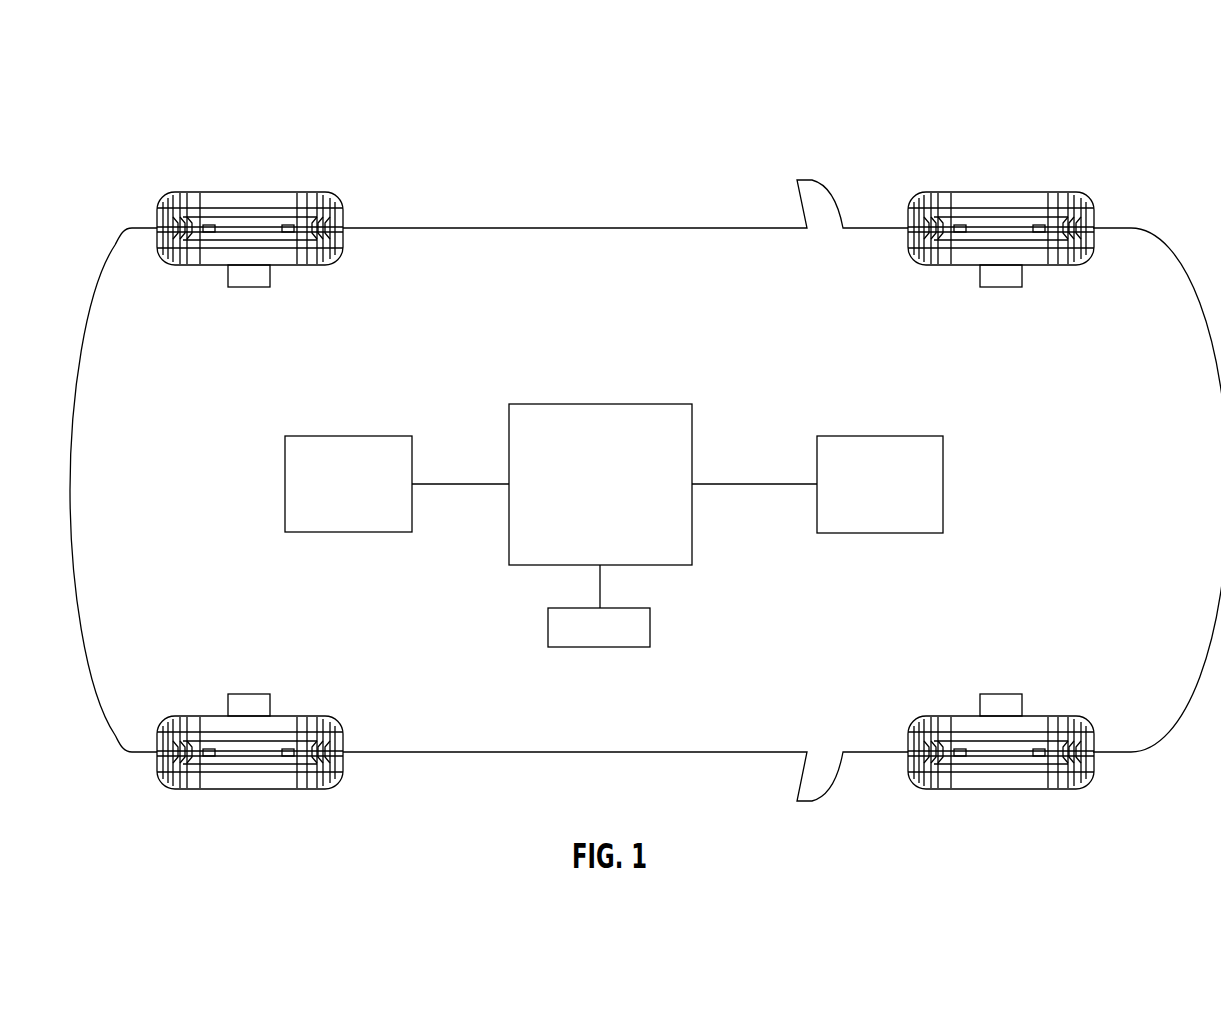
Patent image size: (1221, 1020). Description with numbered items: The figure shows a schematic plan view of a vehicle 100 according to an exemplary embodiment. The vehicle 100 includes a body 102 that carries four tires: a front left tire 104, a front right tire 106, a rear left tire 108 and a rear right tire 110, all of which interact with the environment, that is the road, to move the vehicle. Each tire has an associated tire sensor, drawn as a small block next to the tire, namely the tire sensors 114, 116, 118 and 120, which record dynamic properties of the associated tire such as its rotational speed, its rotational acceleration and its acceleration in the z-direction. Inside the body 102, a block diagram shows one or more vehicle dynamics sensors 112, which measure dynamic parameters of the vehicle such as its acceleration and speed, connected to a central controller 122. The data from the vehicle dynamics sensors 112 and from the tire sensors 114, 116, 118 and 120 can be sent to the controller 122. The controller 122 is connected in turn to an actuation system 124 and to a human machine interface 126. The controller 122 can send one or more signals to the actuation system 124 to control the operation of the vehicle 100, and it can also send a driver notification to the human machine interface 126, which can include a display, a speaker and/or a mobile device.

The vehicle 100 is at (1057, 89).
The body 102 is at (613, 228).
The front left tire 104 is at (1000, 192).
The front right tire 106 is at (1040, 716).
The rear left tire 108 is at (249, 192).
The rear right tire 110 is at (288, 716).
The vehicle dynamics sensors 112 is at (360, 435).
The tire sensor 114 is at (980, 273).
The tire sensor 116 is at (980, 705).
The tire sensor 118 is at (227, 273).
The tire sensor 120 is at (227, 705).
The controller 122 is at (600, 404).
The actuation system 124 is at (868, 436).
The human machine interface 126 is at (548, 625).